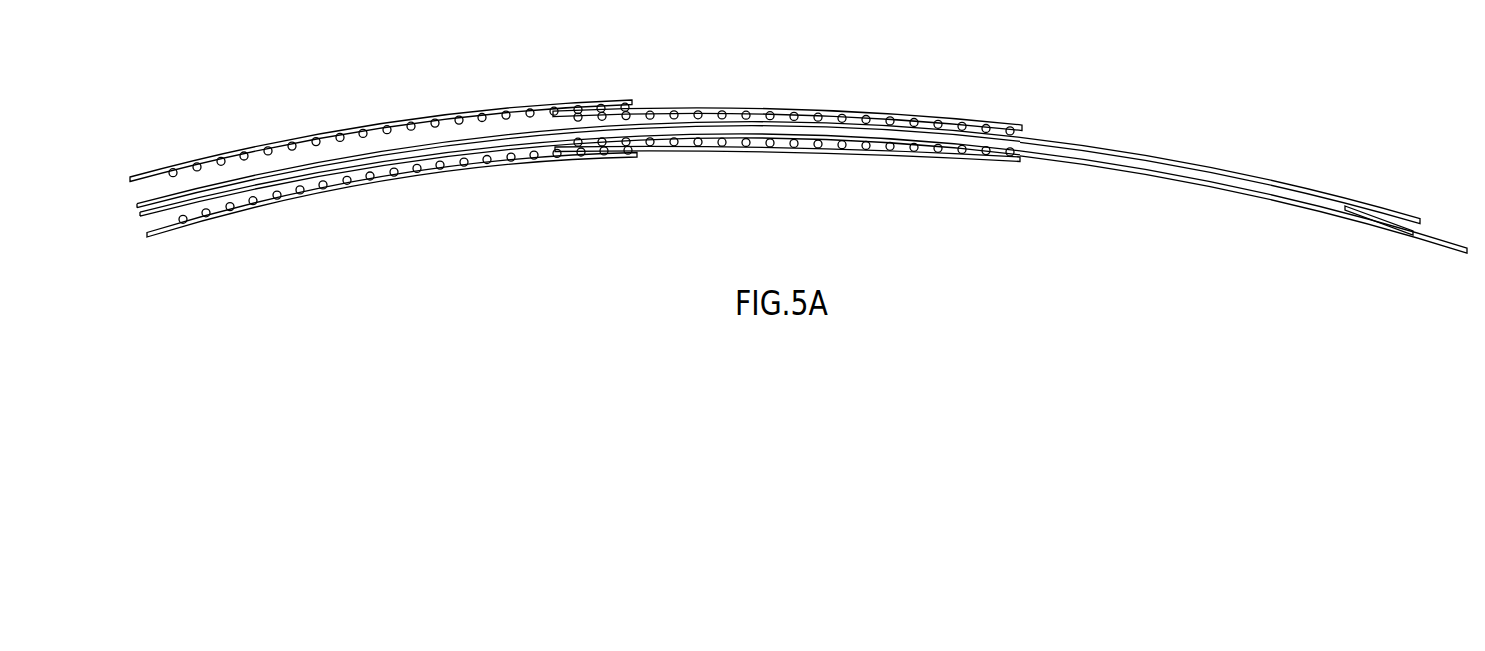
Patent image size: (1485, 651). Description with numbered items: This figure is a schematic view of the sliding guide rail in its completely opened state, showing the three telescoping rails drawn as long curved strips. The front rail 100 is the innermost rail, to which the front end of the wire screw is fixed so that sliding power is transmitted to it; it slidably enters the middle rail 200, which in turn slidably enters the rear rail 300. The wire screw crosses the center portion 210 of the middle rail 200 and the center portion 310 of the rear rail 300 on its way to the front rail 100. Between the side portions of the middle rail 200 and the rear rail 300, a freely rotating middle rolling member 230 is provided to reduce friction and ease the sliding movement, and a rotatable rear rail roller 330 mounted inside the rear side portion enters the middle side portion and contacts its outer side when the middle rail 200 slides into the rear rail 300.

The front rail 100 is at (1212, 187).
The middle rail 200 is at (995, 163).
The center portion of the middle rail 210 is at (832, 137).
The middle rolling member 230 is at (722, 142).
The rear rail 300 is at (237, 210).
The center portion of the rear rail 310 is at (423, 147).
The rear rail roller 330 is at (345, 183).